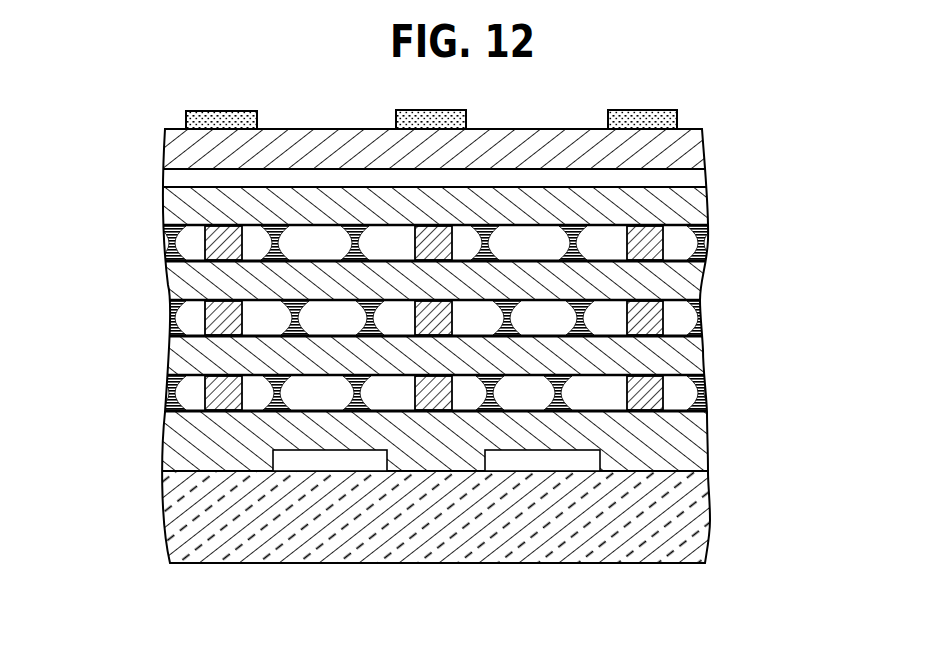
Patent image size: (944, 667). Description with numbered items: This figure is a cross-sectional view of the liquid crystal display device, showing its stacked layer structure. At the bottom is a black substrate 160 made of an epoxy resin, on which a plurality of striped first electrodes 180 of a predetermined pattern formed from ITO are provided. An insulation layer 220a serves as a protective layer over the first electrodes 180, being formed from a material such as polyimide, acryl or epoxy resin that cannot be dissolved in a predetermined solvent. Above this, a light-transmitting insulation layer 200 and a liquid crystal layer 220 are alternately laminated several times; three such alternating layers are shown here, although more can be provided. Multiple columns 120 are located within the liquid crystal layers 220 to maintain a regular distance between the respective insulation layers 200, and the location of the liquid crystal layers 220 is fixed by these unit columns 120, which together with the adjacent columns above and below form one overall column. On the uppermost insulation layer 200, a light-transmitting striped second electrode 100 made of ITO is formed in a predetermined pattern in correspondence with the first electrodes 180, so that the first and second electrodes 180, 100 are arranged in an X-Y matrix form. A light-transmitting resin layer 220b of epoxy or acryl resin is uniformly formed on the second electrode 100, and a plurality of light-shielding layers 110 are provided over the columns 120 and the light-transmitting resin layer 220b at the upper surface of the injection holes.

The second electrode 100 is at (702, 178).
The light-shielding layer 110 is at (186, 120).
The column 120 is at (205, 247).
The black substrate 160 is at (705, 492).
The first electrode 180 is at (328, 462).
The insulation layer 200 is at (703, 209).
The liquid crystal layer 220 is at (704, 246).
The insulation layer 220a is at (708, 440).
The light-transmitting resin layer 220b is at (700, 158).